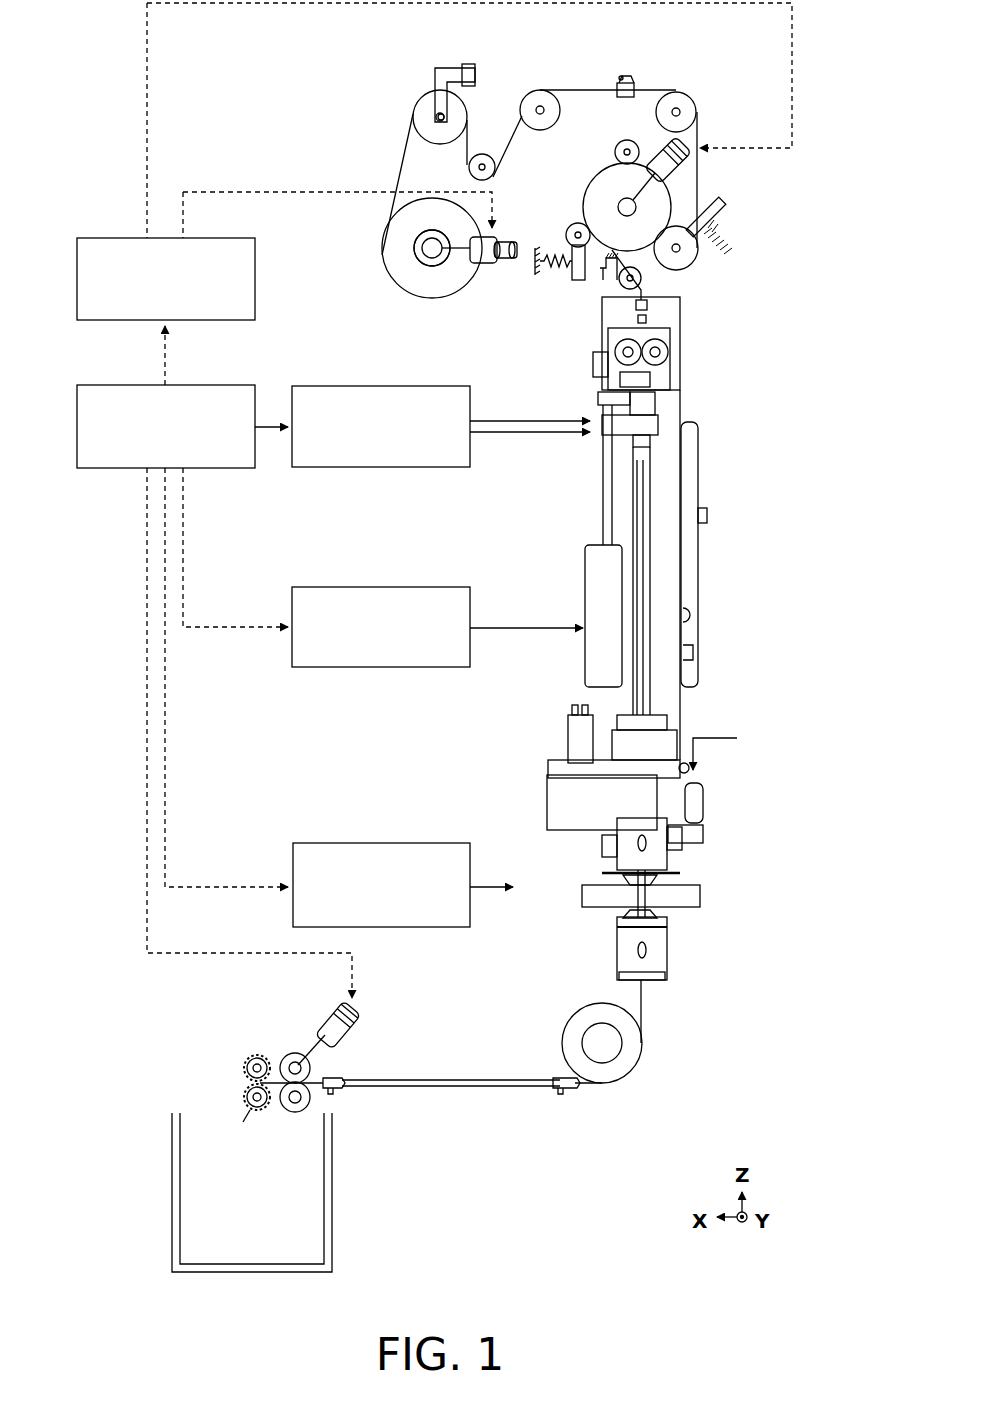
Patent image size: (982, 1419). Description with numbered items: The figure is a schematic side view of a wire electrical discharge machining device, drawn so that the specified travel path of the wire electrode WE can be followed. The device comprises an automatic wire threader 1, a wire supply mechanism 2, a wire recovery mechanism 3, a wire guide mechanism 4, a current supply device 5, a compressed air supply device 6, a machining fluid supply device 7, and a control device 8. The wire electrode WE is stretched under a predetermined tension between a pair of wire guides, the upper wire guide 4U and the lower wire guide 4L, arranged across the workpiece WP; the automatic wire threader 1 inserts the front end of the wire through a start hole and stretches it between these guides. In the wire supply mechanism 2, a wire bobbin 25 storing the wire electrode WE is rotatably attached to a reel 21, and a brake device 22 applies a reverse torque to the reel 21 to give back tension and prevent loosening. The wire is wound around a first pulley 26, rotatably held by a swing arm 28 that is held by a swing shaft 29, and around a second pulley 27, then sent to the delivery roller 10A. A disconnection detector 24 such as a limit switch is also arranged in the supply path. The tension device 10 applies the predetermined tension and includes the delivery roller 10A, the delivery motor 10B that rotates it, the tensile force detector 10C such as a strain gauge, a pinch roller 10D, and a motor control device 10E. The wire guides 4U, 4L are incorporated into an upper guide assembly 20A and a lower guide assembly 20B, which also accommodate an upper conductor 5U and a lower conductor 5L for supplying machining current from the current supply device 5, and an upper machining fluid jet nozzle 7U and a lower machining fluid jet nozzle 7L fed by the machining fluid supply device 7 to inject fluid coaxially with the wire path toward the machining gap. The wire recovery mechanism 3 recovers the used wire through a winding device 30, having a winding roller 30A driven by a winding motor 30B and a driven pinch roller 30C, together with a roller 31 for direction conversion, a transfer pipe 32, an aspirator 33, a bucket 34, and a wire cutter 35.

The automatic wire threader 1 is at (718, 362).
The wire supply mechanism 2 is at (514, 61).
The wire recovery mechanism 3 is at (407, 1119).
The wire guide mechanism 4 is at (652, 886).
The upper wire guide 4U is at (690, 880).
The lower wire guide 4L is at (615, 928).
The current supply device 5 is at (434, 587).
The upper conductor 5U is at (630, 843).
The lower conductor 5L is at (648, 950).
The compressed air supply device 6 is at (434, 386).
The machining fluid supply device 7 is at (434, 843).
The upper machining fluid jet nozzle 7U is at (655, 884).
The lower machining fluid jet nozzle 7L is at (620, 915).
The control device 8 is at (218, 385).
The tension device 10 is at (640, 202).
The delivery roller 10A is at (662, 208).
The delivery motor 10B is at (657, 150).
The tensile force detector 10C is at (605, 270).
The pinch roller 10D is at (568, 230).
The motor control device 10E is at (218, 237).
The upper guide assembly 20A is at (700, 830).
The lower guide assembly 20B is at (668, 974).
The reel 21 is at (414, 259).
The brake device 22 is at (495, 263).
The disconnection detector 24 is at (633, 78).
The wire bobbin 25 is at (426, 262).
The first pulley 26 is at (424, 104).
The second pulley 27 is at (494, 173).
The swing arm 28 is at (437, 72).
The swing shaft 29 is at (466, 65).
The winding device 30 is at (300, 1064).
The winding roller 30A is at (292, 1053).
The winding motor 30B is at (331, 1020).
The pinch roller 30C is at (290, 1113).
The roller for direction conversion 31 is at (572, 1028).
The transfer pipe 32 is at (463, 1080).
The aspirator 33 is at (336, 1078).
The bucket 34 is at (332, 1203).
The wire cutter 35 is at (245, 1080).
The wire electrode WE is at (400, 158).
The workpiece WP is at (590, 898).